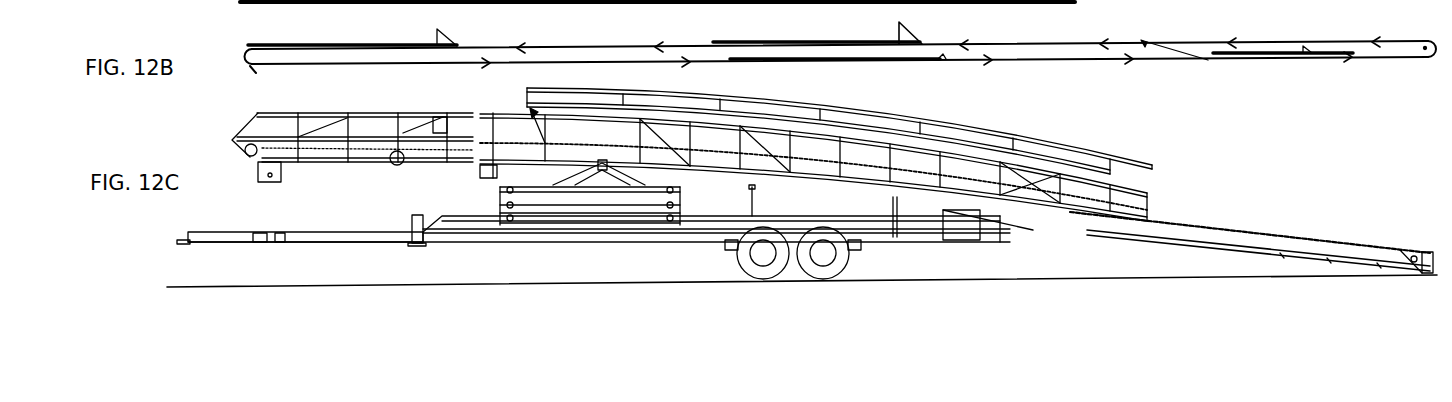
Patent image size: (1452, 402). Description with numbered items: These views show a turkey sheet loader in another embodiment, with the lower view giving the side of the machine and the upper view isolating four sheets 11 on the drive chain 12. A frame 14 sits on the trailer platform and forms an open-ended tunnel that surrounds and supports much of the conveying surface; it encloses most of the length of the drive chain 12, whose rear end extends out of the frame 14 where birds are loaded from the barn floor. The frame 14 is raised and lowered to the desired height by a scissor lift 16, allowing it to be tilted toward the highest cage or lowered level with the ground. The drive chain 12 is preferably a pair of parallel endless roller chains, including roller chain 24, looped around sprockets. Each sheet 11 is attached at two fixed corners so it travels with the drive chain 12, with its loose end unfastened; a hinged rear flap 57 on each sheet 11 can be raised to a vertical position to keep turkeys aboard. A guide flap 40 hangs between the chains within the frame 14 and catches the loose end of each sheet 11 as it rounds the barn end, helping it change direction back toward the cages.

In FIG. 12B, the sheet 11 is at (345, 40).
In FIG. 12B, the drive chain 12 is at (1042, 62).
In FIG. 12C, the drive chain 12 is at (1071, 213).
In FIG. 12C, the frame 14 is at (1143, 192).
In FIG. 12C, the scissor lift 16 is at (622, 226).
In FIG. 12B, the endless roller chain 24 is at (1073, 1).
In FIG. 12B, the guide flap 40 is at (841, 82).
In FIG. 12B, the rear flap 57 is at (910, 27).